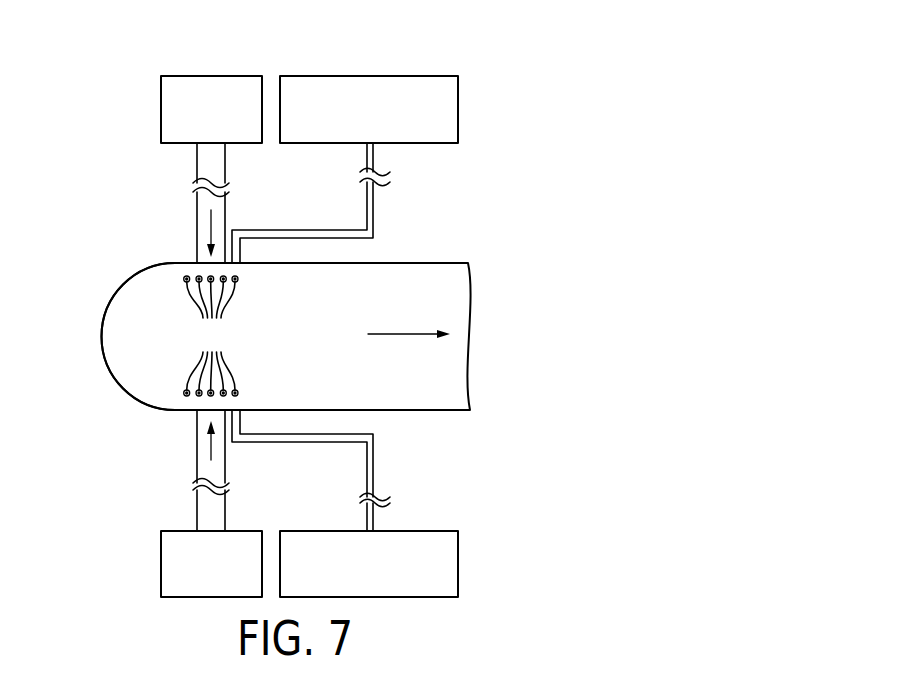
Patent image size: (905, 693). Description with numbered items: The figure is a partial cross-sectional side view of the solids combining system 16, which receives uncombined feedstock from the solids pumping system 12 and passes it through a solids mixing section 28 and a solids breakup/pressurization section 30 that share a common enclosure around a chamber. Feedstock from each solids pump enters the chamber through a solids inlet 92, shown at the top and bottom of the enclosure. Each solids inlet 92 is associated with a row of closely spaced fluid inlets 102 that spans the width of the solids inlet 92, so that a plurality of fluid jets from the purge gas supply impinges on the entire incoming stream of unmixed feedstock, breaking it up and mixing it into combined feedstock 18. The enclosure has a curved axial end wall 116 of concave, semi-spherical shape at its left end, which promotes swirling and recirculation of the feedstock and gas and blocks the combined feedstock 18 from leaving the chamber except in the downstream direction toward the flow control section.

The solids pumping system 12 is at (186, 145).
The solids combining system 16 is at (532, 116).
The combined feedstock 18 is at (405, 334).
The solids mixing section 28 is at (130, 343).
The solids breakup/pressurization section 30 is at (163, 391).
The solids inlet 92 is at (189, 275).
The fluid inlets 102 is at (211, 336).
The axial end wall 116 is at (123, 282).